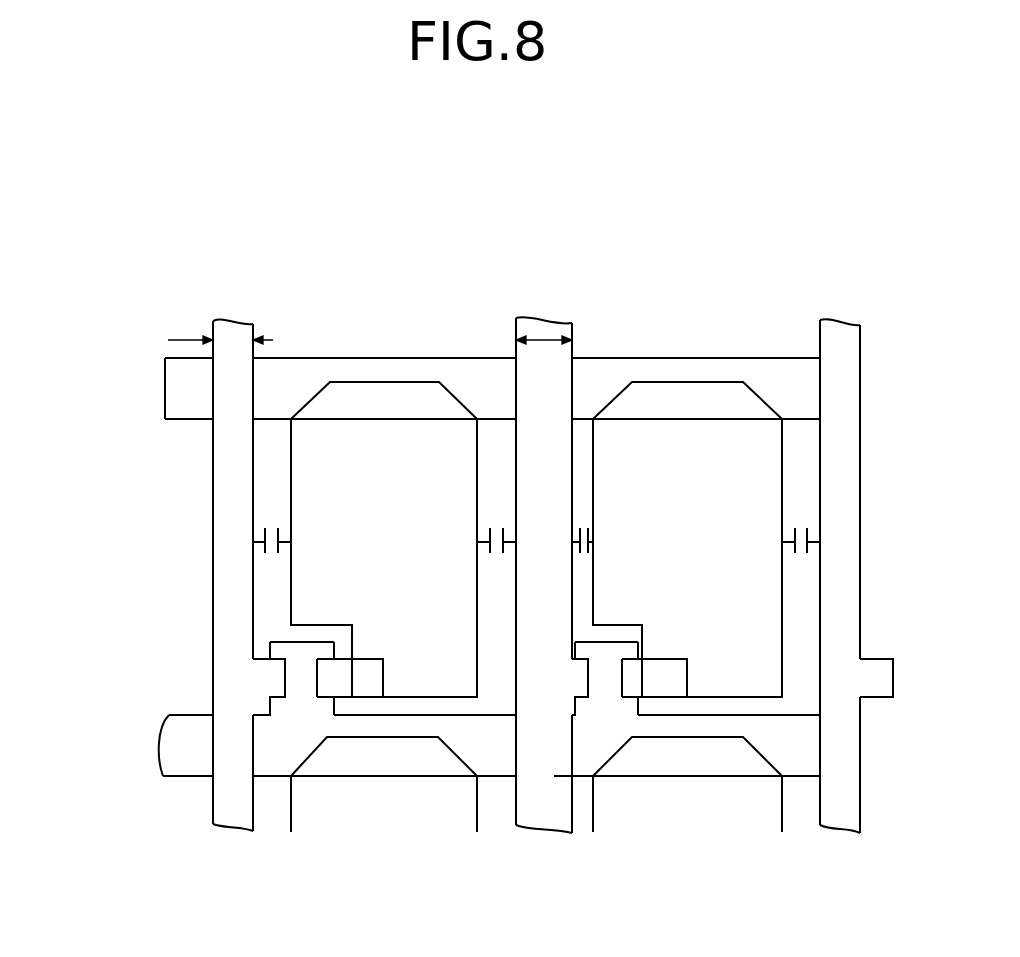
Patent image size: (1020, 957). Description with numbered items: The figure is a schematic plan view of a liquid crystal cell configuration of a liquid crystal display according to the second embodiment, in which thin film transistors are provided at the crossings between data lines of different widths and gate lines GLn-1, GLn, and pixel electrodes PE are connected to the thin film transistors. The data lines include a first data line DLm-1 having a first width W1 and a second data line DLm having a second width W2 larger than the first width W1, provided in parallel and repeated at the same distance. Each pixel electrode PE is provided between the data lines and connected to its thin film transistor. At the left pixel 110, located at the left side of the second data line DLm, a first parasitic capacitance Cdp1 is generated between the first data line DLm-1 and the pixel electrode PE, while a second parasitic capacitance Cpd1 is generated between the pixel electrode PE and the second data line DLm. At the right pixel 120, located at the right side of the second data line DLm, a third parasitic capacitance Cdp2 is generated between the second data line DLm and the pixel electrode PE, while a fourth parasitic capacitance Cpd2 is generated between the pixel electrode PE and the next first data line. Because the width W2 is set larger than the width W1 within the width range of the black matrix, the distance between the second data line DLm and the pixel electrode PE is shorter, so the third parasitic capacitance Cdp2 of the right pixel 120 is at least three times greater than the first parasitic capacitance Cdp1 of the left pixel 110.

The left pixel 110 is at (328, 548).
The right pixel 120 is at (696, 548).
The pixel electrode PE is at (384, 539).
The gate line GLn is at (448, 745).
The gate line GLn-1 is at (431, 388).
The second data line DLm is at (546, 553).
The first data line DLm-1 is at (243, 552).
The first width W1 is at (243, 330).
The second width W2 is at (544, 358).
The first parasitic capacitance Cdp1 is at (265, 553).
The second parasitic capacitance Cpd1 is at (490, 553).
The third parasitic capacitance Cdp2 is at (588, 553).
The fourth parasitic capacitance Cpd2 is at (795, 553).